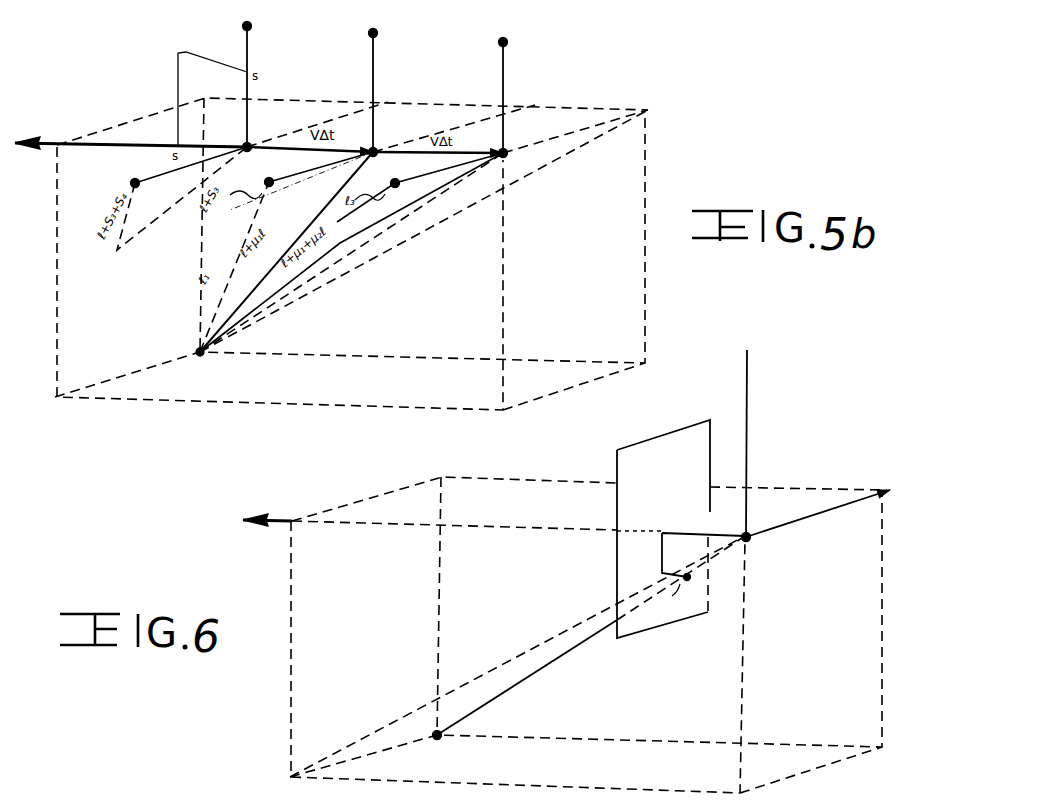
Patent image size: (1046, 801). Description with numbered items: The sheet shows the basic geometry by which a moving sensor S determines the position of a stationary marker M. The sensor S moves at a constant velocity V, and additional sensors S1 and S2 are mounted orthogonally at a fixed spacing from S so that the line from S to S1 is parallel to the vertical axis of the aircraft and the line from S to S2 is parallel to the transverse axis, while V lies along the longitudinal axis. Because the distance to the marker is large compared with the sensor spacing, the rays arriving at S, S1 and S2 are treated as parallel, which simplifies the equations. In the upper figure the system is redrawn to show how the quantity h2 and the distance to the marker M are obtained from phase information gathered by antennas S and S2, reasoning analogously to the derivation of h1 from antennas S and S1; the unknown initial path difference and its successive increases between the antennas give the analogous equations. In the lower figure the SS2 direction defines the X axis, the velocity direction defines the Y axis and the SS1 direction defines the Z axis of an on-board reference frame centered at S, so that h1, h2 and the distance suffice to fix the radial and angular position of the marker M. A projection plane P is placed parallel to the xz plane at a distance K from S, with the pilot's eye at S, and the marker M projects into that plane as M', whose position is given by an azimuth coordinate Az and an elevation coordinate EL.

In FIG. 5b, the additional sensor S1 is at (387, 82).
In FIG. 5b, the moving sensor S is at (373, 142).
In FIG. 6, the moving sensor S is at (751, 528).
In FIG. 5b, the additional sensor S2 is at (310, 184).
In FIG. 5b, the stationary marker M is at (337, 254).
In FIG. 6, the stationary marker M is at (512, 682).
In FIG. 5b, the sensor velocity V is at (131, 132).
In FIG. 6, the sensor velocity V is at (267, 509).
In FIG. 5b, the first height quantity h1 is at (41, 287).
In FIG. 6, the first height quantity h1 is at (266, 635).
In FIG. 5b, the second height quantity h2 is at (123, 100).
In FIG. 6, the second height quantity h2 is at (374, 487).
In FIG. 6, the projection plane P is at (628, 469).
In FIG. 6, the projection plane distance K is at (695, 523).
In FIG. 6, the elevation coordinate EL is at (686, 555).
In FIG. 6, the azimuth coordinate Az is at (669, 599).
In FIG. 6, the projected marker M' is at (696, 582).
In FIG. 6, the z axis Z is at (754, 435).
In FIG. 6, the x axis X is at (827, 510).
In FIG. 6, the y axis Y is at (538, 525).